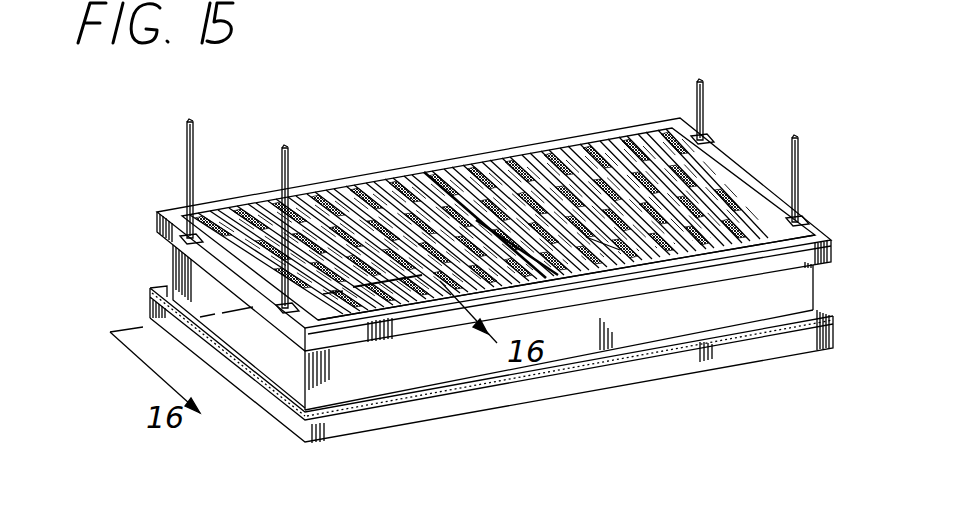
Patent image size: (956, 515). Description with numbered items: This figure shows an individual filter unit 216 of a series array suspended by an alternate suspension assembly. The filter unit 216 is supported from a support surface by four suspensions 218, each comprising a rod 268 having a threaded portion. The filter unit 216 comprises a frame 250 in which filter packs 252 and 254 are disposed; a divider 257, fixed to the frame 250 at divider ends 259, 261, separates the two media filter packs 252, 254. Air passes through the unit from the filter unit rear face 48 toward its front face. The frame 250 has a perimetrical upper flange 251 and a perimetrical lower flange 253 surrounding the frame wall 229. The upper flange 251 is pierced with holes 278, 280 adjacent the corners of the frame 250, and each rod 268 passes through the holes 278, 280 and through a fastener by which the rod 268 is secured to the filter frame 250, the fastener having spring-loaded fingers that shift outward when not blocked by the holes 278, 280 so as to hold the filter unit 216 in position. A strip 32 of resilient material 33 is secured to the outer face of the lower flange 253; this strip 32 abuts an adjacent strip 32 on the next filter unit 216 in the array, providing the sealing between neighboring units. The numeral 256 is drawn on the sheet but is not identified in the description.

The filter unit 216 is at (525, 143).
The suspension 218 is at (185, 162).
The rod 268 is at (288, 157).
The hole 278 is at (178, 232).
The hole 280 is at (800, 222).
The filter pack 252 is at (257, 240).
The filter pack 254 is at (680, 197).
The filter unit rear face 48 is at (365, 205).
The divider end 259 is at (433, 170).
The divider 257 is at (473, 213).
The strip element 256 is at (590, 237).
The divider end 261 is at (547, 283).
The frame 250 is at (490, 363).
The upper flange 251 is at (743, 270).
The frame wall 229 is at (790, 310).
The strip 32 is at (447, 400).
The resilient material 33 is at (400, 428).
The lower flange 253 is at (297, 422).